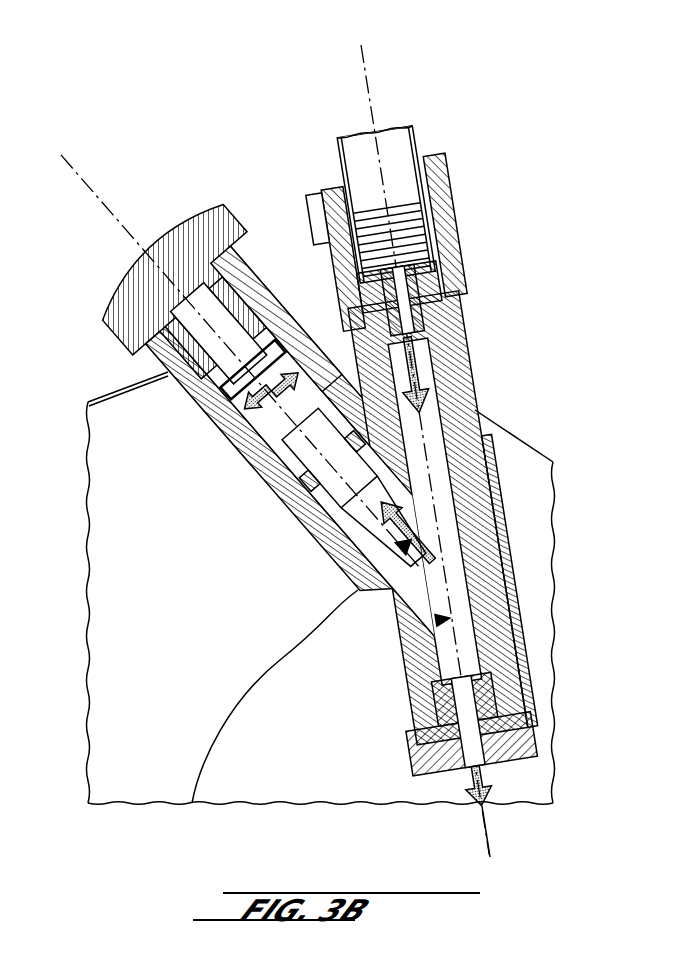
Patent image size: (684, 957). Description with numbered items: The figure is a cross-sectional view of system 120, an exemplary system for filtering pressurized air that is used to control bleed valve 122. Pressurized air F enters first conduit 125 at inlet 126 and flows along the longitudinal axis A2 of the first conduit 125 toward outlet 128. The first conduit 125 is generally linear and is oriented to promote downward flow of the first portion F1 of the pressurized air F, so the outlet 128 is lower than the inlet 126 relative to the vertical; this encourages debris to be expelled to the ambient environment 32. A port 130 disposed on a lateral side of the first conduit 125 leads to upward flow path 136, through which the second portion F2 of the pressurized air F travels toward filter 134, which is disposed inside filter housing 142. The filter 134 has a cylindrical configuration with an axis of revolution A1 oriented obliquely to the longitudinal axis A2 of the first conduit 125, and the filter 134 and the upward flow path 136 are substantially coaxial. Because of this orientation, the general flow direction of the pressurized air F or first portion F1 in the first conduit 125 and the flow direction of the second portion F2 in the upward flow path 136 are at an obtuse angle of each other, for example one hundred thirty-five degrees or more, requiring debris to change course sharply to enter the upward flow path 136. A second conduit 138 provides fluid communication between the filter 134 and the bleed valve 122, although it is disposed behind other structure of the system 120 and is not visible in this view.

The system 120 is at (173, 140).
The bleed valve 122 is at (115, 494).
The first conduit 125 is at (483, 455).
The inlet 126 is at (458, 308).
The outlet 128 is at (472, 684).
The port 130 is at (455, 578).
The filter 134 is at (278, 420).
The upward flow path 136 is at (192, 803).
The second conduit 138 is at (280, 535).
The filter housing 142 is at (264, 290).
The ambient environment 32 is at (548, 856).
The axis of revolution A1 is at (103, 208).
The longitudinal axis A2 is at (368, 79).
The pressurized air F is at (440, 382).
The first portion of pressurized air F1 is at (488, 788).
The second portion of pressurized air F2 is at (410, 500).